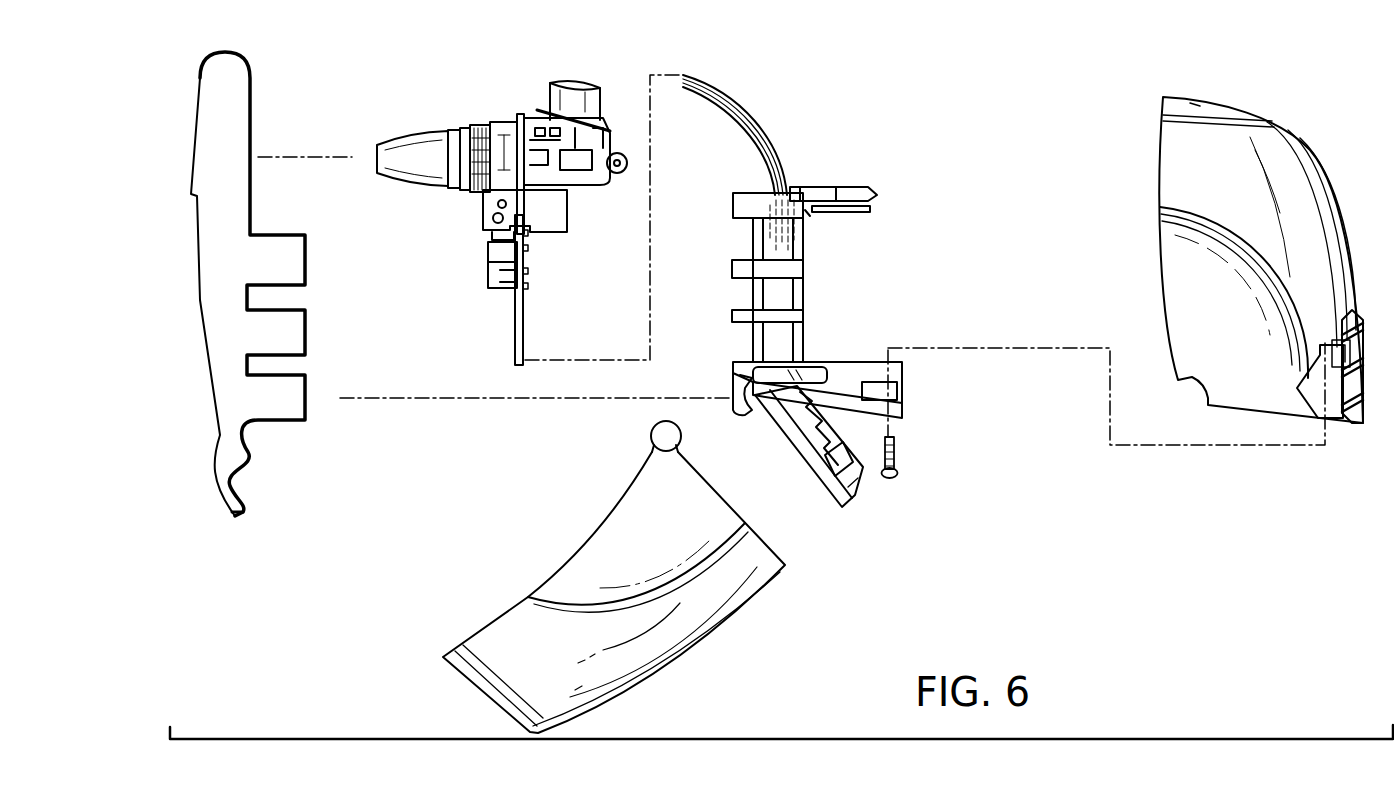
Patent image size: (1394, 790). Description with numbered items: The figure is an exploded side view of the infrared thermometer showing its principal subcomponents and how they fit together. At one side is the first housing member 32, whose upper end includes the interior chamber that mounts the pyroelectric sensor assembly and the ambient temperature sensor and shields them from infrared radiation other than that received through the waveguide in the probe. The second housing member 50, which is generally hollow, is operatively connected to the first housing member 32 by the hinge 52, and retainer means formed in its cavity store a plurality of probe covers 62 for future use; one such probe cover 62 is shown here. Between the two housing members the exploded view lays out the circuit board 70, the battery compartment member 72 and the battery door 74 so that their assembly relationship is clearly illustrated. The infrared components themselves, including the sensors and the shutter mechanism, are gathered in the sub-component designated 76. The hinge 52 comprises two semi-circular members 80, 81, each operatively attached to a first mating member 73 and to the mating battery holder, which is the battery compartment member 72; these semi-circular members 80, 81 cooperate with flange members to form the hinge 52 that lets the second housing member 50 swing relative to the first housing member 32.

The first housing member 32 is at (1342, 200).
The second housing member 50 is at (763, 588).
The hinge 52 is at (652, 438).
The probe cover 62 is at (425, 132).
The circuit board 70 is at (515, 306).
The battery compartment member 72 is at (853, 186).
The first mating member 73 is at (200, 90).
The battery door 74 is at (856, 488).
The infrared sub-component 76 is at (517, 114).
The semi-circular member 80 is at (744, 419).
The semi-circular member 81 is at (240, 514).